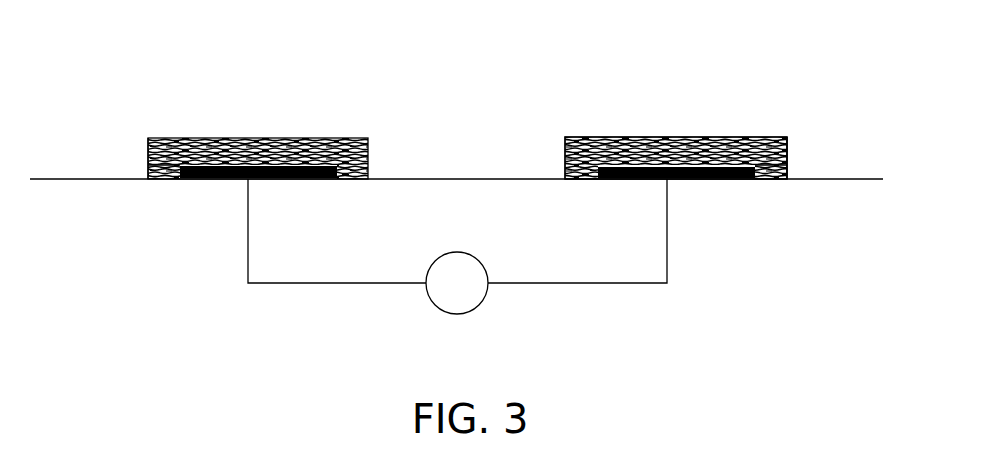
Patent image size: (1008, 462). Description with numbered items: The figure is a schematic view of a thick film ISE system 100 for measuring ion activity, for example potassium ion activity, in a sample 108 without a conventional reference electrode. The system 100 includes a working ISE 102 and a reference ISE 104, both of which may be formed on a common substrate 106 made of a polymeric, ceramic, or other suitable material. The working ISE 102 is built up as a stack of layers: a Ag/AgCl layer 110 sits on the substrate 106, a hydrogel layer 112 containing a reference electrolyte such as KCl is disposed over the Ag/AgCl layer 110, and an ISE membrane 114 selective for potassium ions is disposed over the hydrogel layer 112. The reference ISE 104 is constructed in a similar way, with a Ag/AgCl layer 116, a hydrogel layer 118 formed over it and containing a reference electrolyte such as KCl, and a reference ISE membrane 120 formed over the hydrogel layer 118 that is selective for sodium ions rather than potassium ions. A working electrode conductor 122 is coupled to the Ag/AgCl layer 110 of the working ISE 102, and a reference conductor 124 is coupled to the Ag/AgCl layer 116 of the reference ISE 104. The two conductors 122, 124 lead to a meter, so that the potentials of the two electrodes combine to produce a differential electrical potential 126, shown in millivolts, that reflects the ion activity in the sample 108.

The ISE system 100 is at (678, 82).
The working ISE 102 is at (367, 108).
The reference ISE 104 is at (808, 100).
The substrate 106 is at (175, 242).
The sample 108 is at (527, 67).
The Ag/AgCl layer 110 is at (195, 180).
The hydrogel layer 112 is at (148, 157).
The ISE membrane 114 is at (220, 148).
The Ag/AgCl layer 116 is at (737, 180).
The hydrogel layer 118 is at (787, 160).
The reference ISE membrane 120 is at (622, 140).
The working electrode conductor 122 is at (298, 284).
The reference conductor 124 is at (587, 284).
The differential electrical potential 126 is at (457, 314).